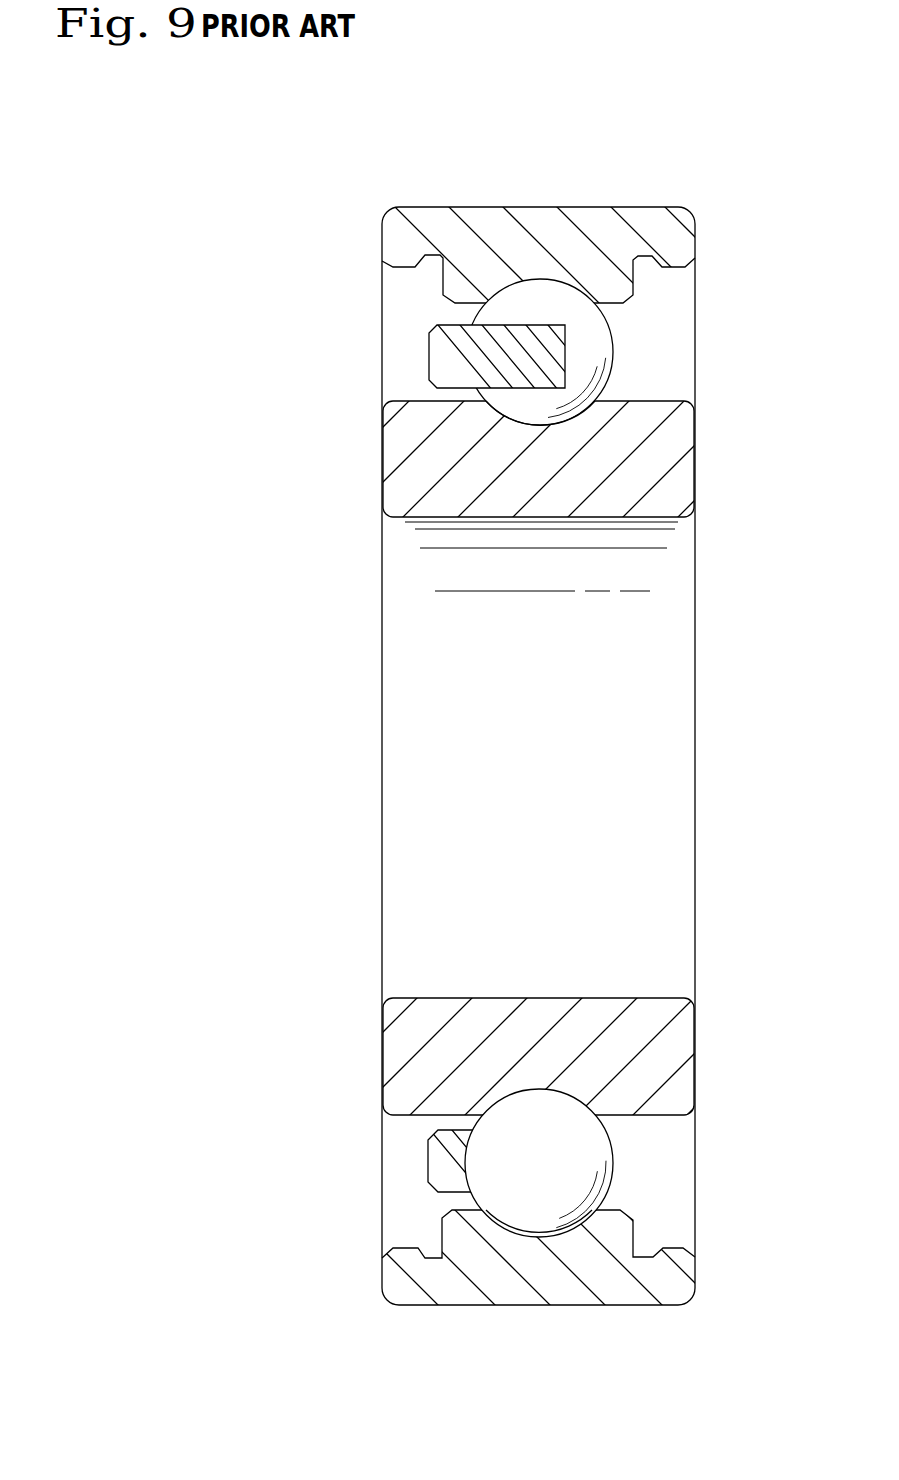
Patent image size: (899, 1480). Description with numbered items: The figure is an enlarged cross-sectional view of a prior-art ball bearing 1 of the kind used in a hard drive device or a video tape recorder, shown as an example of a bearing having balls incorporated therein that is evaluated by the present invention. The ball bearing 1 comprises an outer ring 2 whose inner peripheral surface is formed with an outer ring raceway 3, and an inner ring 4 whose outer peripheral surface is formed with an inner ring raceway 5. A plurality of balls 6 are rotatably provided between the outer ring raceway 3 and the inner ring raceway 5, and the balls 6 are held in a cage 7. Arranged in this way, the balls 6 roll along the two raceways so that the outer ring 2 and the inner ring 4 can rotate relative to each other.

The ball bearing 1 is at (708, 215).
The outer ring 2 is at (493, 226).
The outer ring raceway 3 is at (545, 278).
The inner ring 4 is at (667, 458).
The inner ring raceway 5 is at (537, 425).
The balls 6 is at (513, 401).
The cage 7 is at (445, 358).